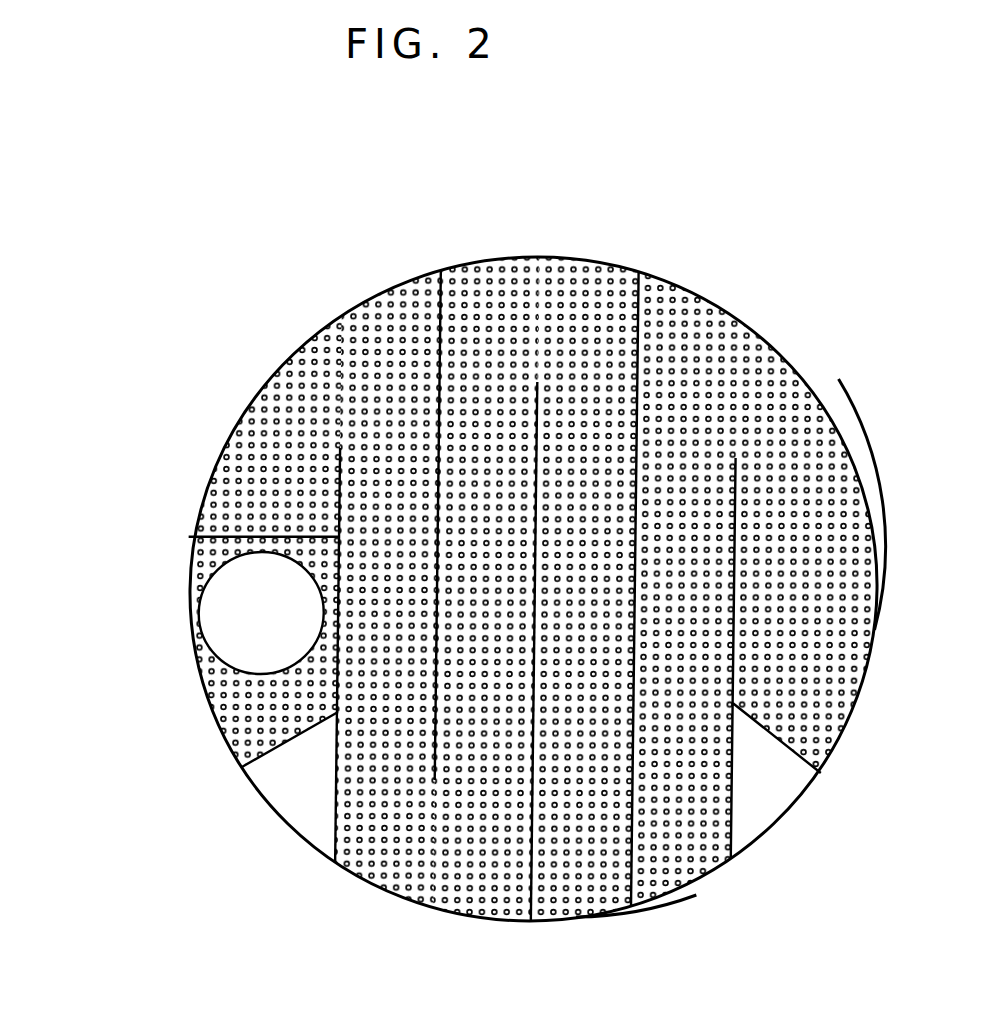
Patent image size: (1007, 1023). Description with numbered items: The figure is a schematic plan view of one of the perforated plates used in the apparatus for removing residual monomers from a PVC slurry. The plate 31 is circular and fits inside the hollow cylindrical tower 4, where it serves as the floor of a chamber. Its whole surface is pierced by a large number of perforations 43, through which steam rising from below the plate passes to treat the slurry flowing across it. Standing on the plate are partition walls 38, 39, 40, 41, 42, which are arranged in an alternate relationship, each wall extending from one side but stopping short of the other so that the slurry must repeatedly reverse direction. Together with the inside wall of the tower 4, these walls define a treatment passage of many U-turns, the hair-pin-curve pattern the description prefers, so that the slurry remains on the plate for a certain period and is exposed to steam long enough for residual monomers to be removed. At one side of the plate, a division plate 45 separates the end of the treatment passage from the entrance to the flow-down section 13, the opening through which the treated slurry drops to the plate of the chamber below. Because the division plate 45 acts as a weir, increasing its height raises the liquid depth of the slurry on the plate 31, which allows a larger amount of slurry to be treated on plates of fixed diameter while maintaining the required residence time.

The hollow cylindrical tower 4 is at (303, 343).
The flow-down section 13 is at (242, 600).
The perforated plate 31 is at (860, 480).
The partition wall 38 is at (737, 458).
The partition wall 39 is at (537, 433).
The partition wall 40 is at (638, 425).
The partition wall 41 is at (441, 422).
The partition wall 42 is at (341, 470).
The perforations 43 is at (643, 875).
The division plate 45 is at (245, 535).